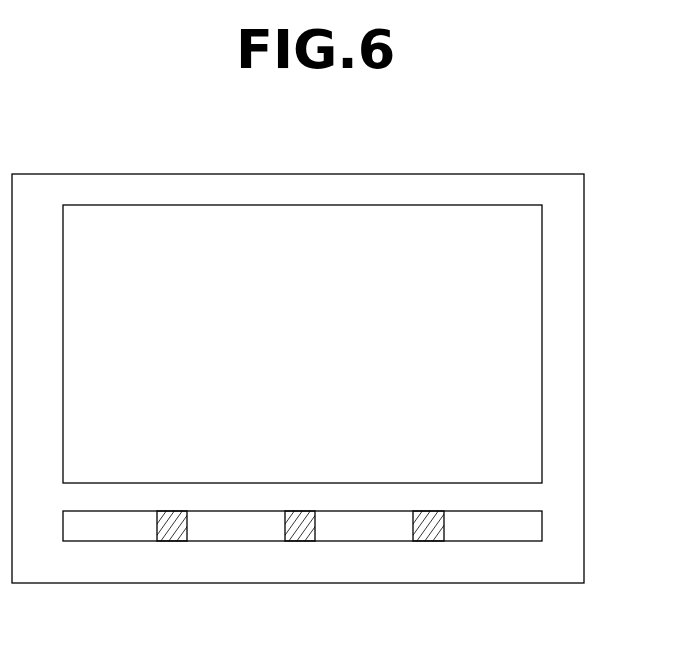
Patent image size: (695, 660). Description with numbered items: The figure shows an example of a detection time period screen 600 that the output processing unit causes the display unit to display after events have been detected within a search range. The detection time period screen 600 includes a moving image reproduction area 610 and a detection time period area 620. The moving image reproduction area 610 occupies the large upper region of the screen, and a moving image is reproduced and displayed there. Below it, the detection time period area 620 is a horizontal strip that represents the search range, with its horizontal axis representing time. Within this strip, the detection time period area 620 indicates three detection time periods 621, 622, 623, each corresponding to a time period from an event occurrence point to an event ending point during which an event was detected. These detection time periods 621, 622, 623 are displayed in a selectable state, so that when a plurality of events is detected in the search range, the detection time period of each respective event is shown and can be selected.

The detection time period screen 600 is at (400, 173).
The moving image reproduction area 610 is at (542, 328).
The detection time period area 620 is at (542, 524).
The detection time period 621 is at (173, 541).
The detection time period 622 is at (298, 541).
The detection time period 623 is at (429, 541).